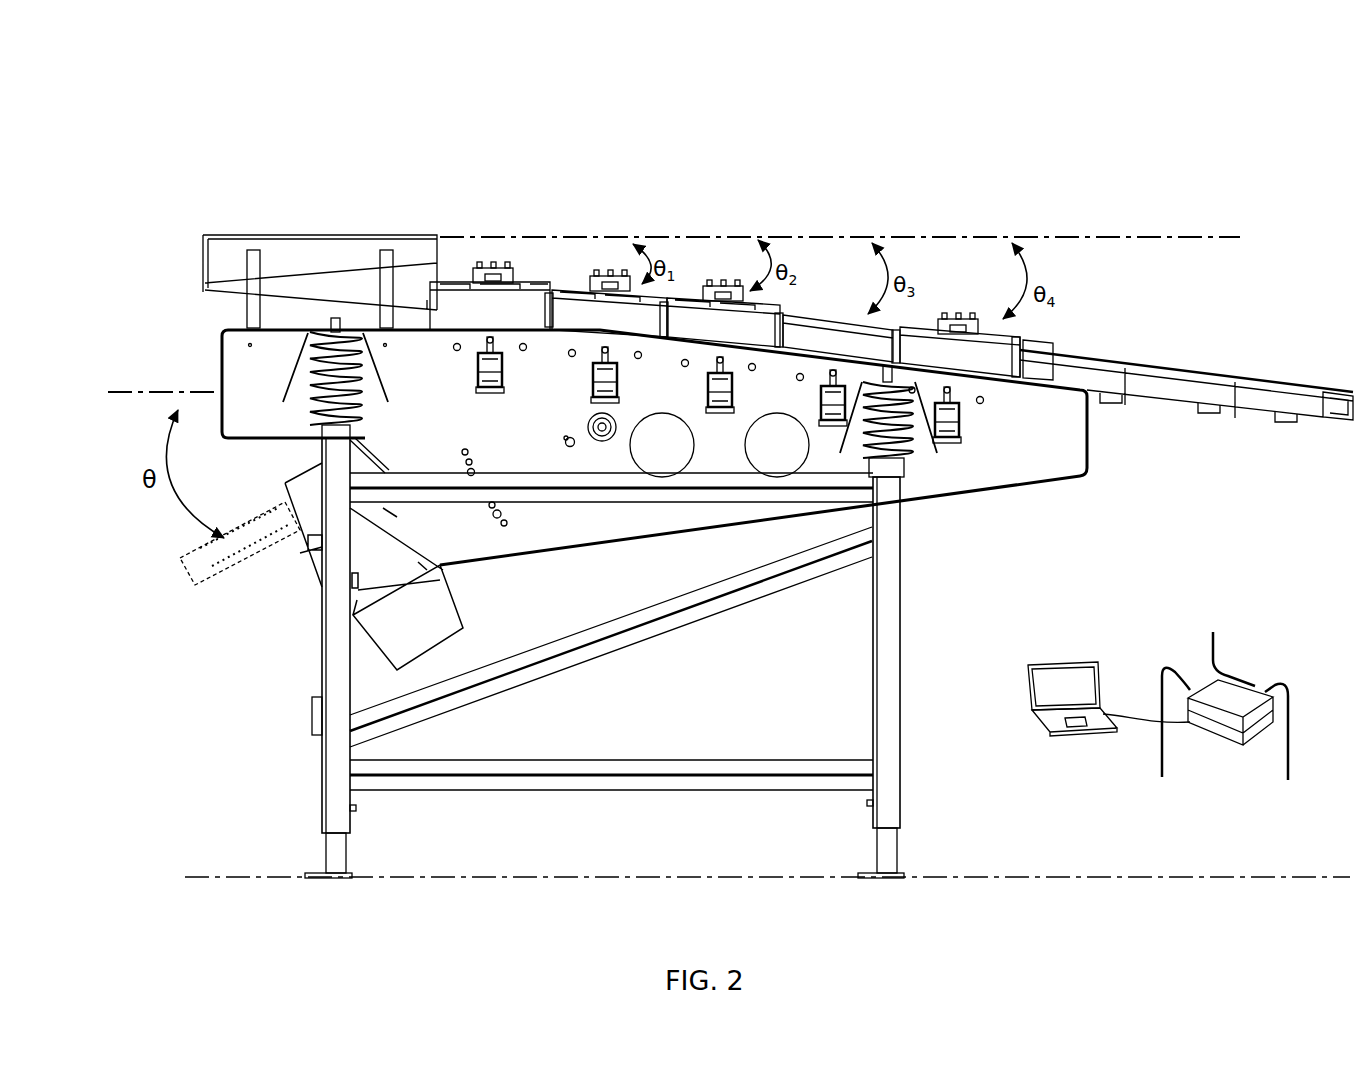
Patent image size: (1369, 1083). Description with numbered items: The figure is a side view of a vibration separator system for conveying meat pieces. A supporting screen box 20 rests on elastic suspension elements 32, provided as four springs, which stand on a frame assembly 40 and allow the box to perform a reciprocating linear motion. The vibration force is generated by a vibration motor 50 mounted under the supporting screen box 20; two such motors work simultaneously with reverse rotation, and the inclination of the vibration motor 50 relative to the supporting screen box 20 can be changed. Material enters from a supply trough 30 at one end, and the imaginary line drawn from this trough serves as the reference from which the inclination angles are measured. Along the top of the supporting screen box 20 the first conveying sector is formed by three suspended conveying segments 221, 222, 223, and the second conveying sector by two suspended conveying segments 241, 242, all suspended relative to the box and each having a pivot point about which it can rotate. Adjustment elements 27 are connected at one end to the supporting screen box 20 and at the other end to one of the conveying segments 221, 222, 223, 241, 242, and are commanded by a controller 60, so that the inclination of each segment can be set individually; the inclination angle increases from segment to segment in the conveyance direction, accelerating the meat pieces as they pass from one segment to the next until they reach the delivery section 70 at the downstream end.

The supporting screen box 20 is at (1097, 452).
The adjustment elements 27 is at (468, 373).
The supply trough 30 is at (324, 216).
The elastic suspension elements 32 is at (308, 345).
The frame assembly 40 is at (294, 727).
The vibration motor 50 is at (303, 617).
The controller 60 is at (1028, 690).
The delivery section 70 is at (1232, 344).
The first conveying segment 221 is at (497, 253).
The first conveying segment 222 is at (601, 261).
The first conveying segment 223 is at (716, 273).
The second conveying segment 241 is at (837, 310).
The second conveying segment 242 is at (958, 306).